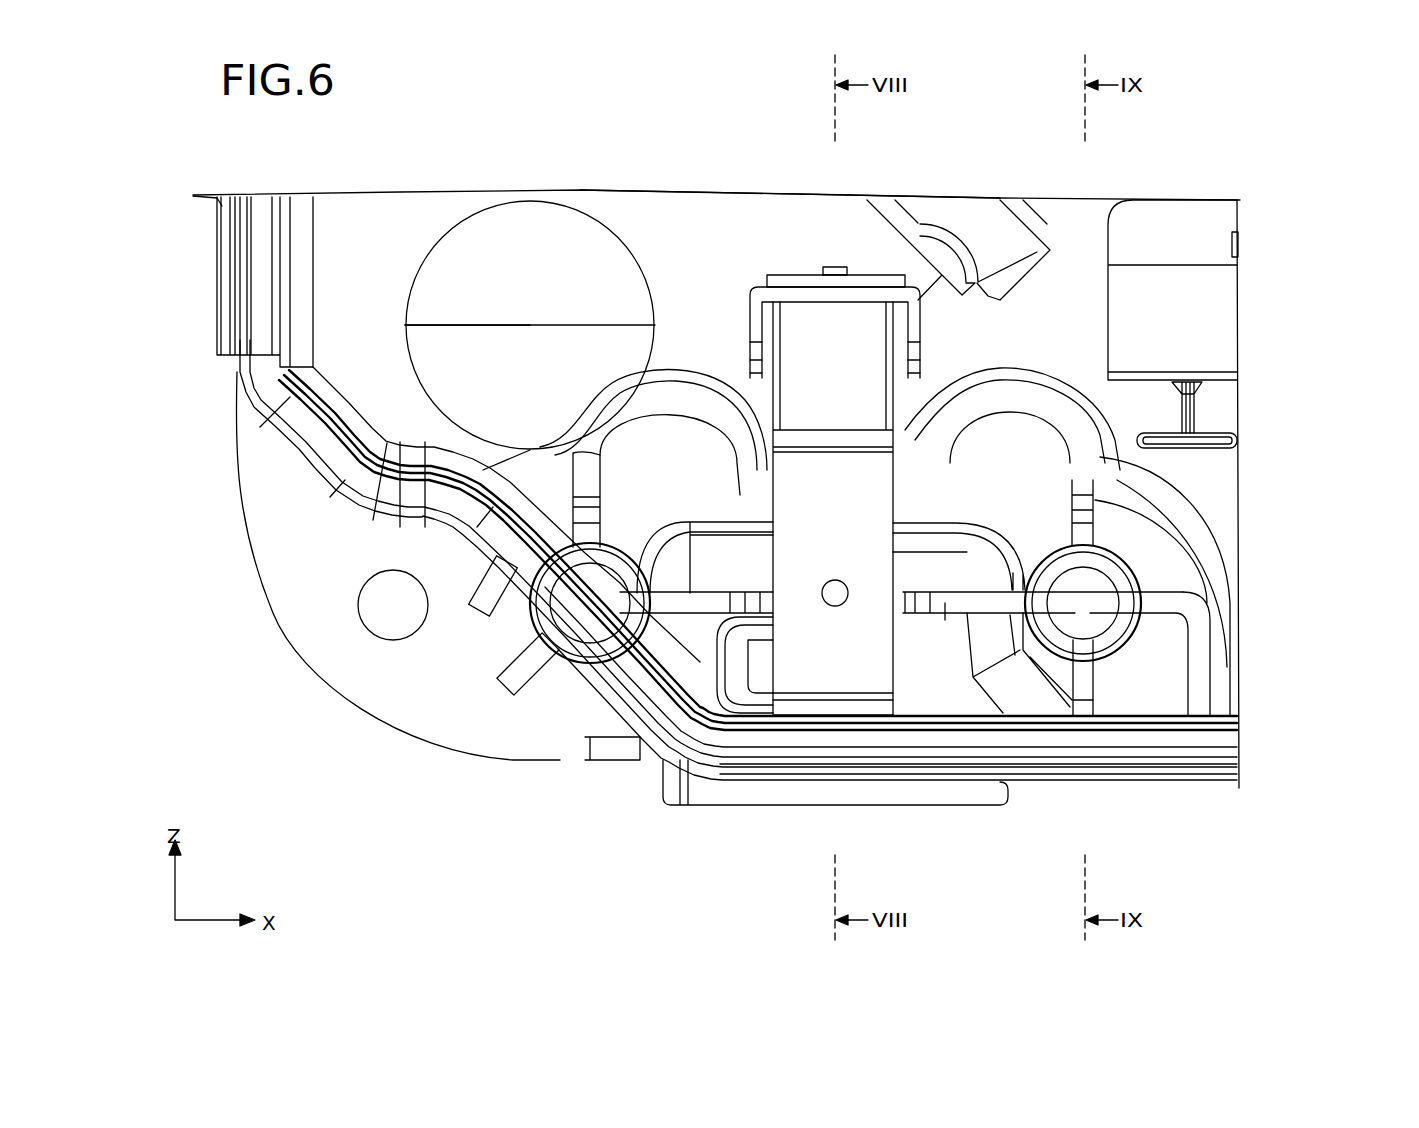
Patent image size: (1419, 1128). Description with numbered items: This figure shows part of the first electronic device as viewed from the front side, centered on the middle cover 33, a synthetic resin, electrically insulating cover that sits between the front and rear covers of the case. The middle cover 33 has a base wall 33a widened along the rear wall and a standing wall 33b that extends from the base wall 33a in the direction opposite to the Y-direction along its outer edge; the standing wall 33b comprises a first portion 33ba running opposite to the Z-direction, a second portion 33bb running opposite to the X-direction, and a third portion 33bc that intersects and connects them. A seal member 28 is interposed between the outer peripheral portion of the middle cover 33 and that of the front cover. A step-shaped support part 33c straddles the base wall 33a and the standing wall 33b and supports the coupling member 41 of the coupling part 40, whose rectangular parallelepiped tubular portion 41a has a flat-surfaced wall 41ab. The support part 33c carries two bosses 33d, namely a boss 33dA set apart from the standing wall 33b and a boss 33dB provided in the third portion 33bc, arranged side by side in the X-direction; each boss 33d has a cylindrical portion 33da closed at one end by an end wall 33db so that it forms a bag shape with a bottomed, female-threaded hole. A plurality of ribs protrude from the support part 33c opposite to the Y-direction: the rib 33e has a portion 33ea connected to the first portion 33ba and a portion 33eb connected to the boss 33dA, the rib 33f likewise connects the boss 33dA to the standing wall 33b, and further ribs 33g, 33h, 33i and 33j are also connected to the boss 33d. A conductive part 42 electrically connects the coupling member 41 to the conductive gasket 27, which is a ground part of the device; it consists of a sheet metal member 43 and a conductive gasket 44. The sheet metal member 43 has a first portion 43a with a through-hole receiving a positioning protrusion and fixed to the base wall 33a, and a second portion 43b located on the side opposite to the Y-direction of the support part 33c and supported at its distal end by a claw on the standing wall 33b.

The conductive gasket 27 is at (798, 333).
The seal member 28 is at (320, 440).
The middle cover 33 is at (790, 193).
The base wall 33a is at (700, 300).
The standing wall 33b is at (978, 812).
The first portion 33ba is at (1147, 780).
The second portion 33bb is at (213, 300).
The third portion 33bc is at (482, 553).
The support part 33c is at (700, 640).
The boss 33d is at (799, 574).
The boss 33dA is at (1100, 590).
The boss 33dB is at (799, 574).
The cylindrical portion 33da is at (560, 668).
The end wall 33db is at (590, 667).
The rib 33e is at (1227, 653).
The portion 33ea is at (1200, 652).
The portion 33eb is at (1160, 603).
The rib 33f is at (1083, 682).
The rib 33g is at (945, 603).
The rib 33h is at (1097, 535).
The rib 33i is at (648, 600).
The rib 33j is at (550, 490).
The coupling part 40 is at (816, 807).
The coupling member 41 is at (816, 807).
The tubular portion 41a is at (816, 807).
The wall 41ab is at (733, 690).
The conductive part 42 is at (1034, 582).
The sheet metal member 43 is at (1034, 582).
The first portion 43a is at (905, 397).
The second portion 43b is at (845, 623).
The conductive gasket 44 is at (816, 807).